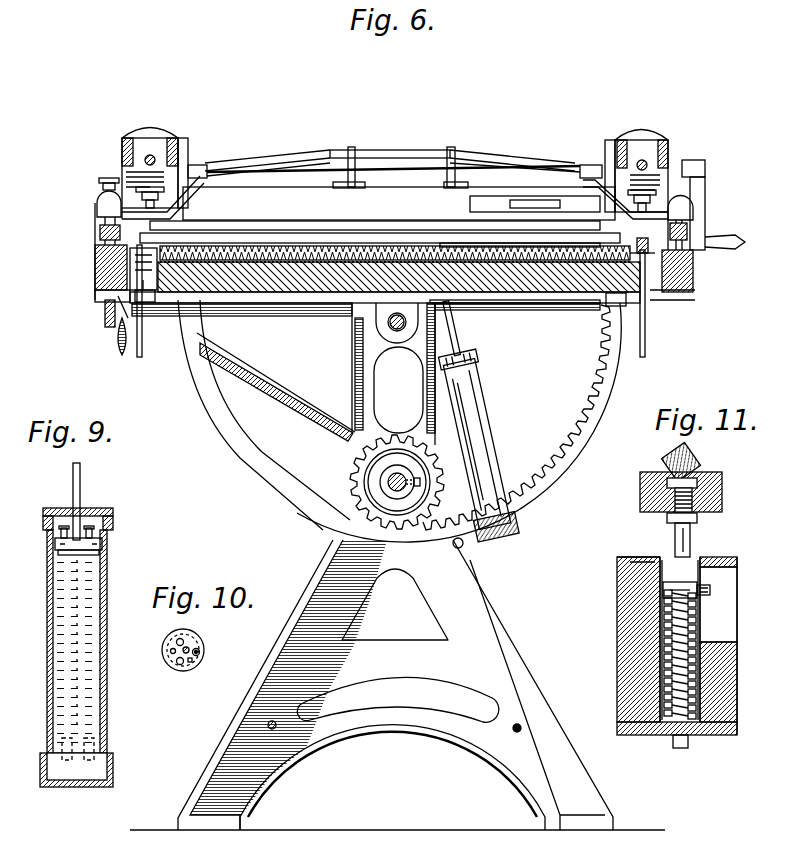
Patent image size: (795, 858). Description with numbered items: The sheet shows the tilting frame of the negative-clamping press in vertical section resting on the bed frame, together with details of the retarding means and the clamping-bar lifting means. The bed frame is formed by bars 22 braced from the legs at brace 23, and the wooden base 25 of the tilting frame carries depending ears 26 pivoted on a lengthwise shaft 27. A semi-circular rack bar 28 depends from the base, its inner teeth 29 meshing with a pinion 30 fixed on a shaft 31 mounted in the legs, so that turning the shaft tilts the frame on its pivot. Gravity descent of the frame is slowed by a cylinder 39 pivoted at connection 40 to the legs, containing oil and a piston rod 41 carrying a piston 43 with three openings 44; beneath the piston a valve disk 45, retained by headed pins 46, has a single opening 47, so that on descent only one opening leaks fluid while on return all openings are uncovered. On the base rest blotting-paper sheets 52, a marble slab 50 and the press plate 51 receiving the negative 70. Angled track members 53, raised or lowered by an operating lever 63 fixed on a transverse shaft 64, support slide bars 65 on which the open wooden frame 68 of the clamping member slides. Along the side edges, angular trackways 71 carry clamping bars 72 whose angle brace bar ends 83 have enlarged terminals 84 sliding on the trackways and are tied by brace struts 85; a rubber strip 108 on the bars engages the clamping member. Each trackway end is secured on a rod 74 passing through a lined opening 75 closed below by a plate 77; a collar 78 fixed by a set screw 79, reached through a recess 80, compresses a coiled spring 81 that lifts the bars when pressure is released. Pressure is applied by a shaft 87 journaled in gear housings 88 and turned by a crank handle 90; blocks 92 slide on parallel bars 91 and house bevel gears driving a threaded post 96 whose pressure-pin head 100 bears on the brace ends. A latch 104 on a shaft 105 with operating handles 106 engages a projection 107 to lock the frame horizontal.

In FIG. 6, the bars 22 is at (268, 306).
In FIG. 6, the brace 23 is at (266, 372).
In FIG. 6, the base 25 is at (233, 282).
In FIG. 11, the base 25 is at (732, 696).
In FIG. 6, the depending ears 26 is at (383, 316).
In FIG. 6, the shaft 27 is at (393, 327).
In FIG. 6, the segmental rack bar 28 is at (566, 448).
In FIG. 6, the teeth 29 is at (540, 462).
In FIG. 6, the pinion 30 is at (370, 470).
In FIG. 6, the shaft 31 is at (390, 484).
In FIG. 6, the cylinder 39 is at (470, 396).
In FIG. 9, the cylinder 39 is at (107, 596).
In FIG. 6, the pivotal connection 40 is at (455, 546).
In FIG. 6, the piston rod 41 is at (455, 338).
In FIG. 9, the piston rod 41 is at (81, 492).
In FIG. 10, the piston rod 41 is at (188, 647).
In FIG. 9, the piston 43 is at (102, 545).
In FIG. 10, the piston 43 is at (163, 646).
In FIG. 10, the openings 44 is at (179, 639).
In FIG. 9, the valve disk 45 is at (68, 553).
In FIG. 10, the valve disk 45 is at (195, 668).
In FIG. 9, the pins 46 is at (60, 532).
In FIG. 10, the opening 47 is at (201, 654).
In FIG. 6, the slab 50 is at (392, 248).
In FIG. 6, the press plate 51 is at (326, 246).
In FIG. 6, the sheets 52 is at (514, 304).
In FIG. 6, the track members 53 is at (150, 300).
In FIG. 6, the operating lever 63 is at (143, 348).
In FIG. 6, the shaft 64 is at (570, 300).
In FIG. 6, the slide bars 65 is at (552, 245).
In FIG. 6, the frame 68 is at (470, 220).
In FIG. 6, the negative 70 is at (494, 296).
In FIG. 6, the trackways 71 is at (100, 232).
In FIG. 11, the trackways 71 is at (700, 463).
In FIG. 6, the clamping bars 72 is at (482, 200).
In FIG. 11, the rods 74 is at (690, 540).
In FIG. 11, the openings 75 is at (662, 640).
In FIG. 11, the plate 77 is at (703, 736).
In FIG. 11, the collar 78 is at (663, 590).
In FIG. 11, the set screw 79 is at (710, 590).
In FIG. 11, the recesses 80 is at (725, 622).
In FIG. 11, the coiled spring 81 is at (660, 668).
In FIG. 6, the angle brace bar ends 83 is at (253, 180).
In FIG. 6, the enlarged terminals 84 is at (100, 207).
In FIG. 6, the brace struts 85 is at (430, 152).
In FIG. 6, the shaft 87 is at (378, 180).
In FIG. 6, the gear housings 88 is at (188, 150).
In FIG. 6, the crank handle 90 is at (706, 187).
In FIG. 6, the bars 91 is at (180, 142).
In FIG. 6, the blocks 92 is at (158, 137).
In FIG. 6, the threaded post 96 is at (123, 188).
In FIG. 6, the head 100 is at (160, 210).
In FIG. 6, the latch 104 is at (100, 296).
In FIG. 6, the shaft 105 is at (105, 316).
In FIG. 6, the operating handles 106 is at (118, 345).
In FIG. 6, the projection 107 is at (110, 275).
In FIG. 6, the rubber strip 108 is at (523, 210).